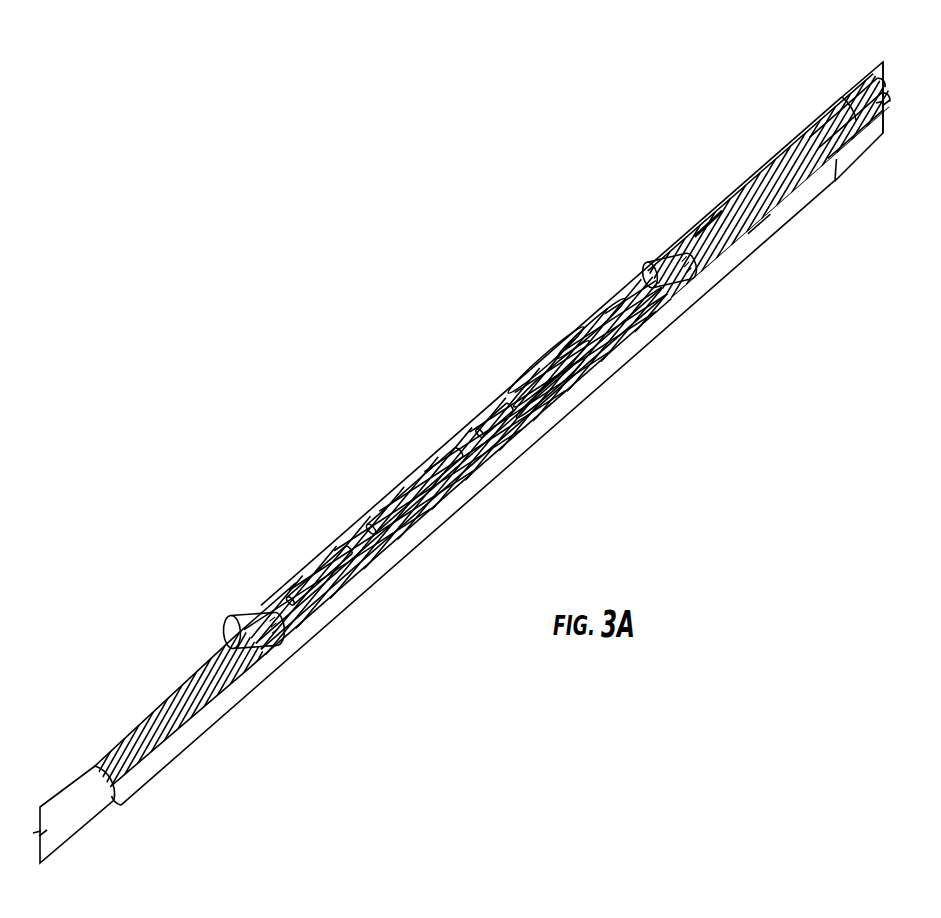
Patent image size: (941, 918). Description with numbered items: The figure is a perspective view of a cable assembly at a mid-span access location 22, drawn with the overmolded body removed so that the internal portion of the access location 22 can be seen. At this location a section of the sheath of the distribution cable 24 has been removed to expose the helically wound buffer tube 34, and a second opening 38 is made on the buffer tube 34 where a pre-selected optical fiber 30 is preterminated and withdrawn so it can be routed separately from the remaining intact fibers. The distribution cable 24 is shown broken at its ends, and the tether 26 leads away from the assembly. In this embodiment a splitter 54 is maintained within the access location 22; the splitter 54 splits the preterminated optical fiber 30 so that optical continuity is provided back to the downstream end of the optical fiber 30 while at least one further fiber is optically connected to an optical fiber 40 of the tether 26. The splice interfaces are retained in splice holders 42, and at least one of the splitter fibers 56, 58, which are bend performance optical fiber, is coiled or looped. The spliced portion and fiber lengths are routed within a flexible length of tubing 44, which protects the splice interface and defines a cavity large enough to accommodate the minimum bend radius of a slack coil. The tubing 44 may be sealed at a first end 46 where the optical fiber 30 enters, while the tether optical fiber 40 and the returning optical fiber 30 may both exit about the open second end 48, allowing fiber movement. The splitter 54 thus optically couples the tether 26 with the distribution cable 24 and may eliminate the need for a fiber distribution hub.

The mid-span access location 22 is at (497, 470).
The distribution cable 24 is at (80, 817).
The tether 26 is at (872, 80).
The optical fiber 30 is at (218, 657).
The buffer tube 34 is at (227, 673).
The second opening 38 is at (758, 226).
The optical fiber of the tether 40 is at (703, 230).
The splice holder 42 is at (327, 572).
The tubing 44 is at (280, 585).
The first end of the tubing 46 is at (236, 616).
The second end of the tubing 48 is at (652, 265).
The splitter 54 is at (403, 500).
The splitter fiber 56 is at (545, 352).
The splitter fiber 58 is at (600, 313).